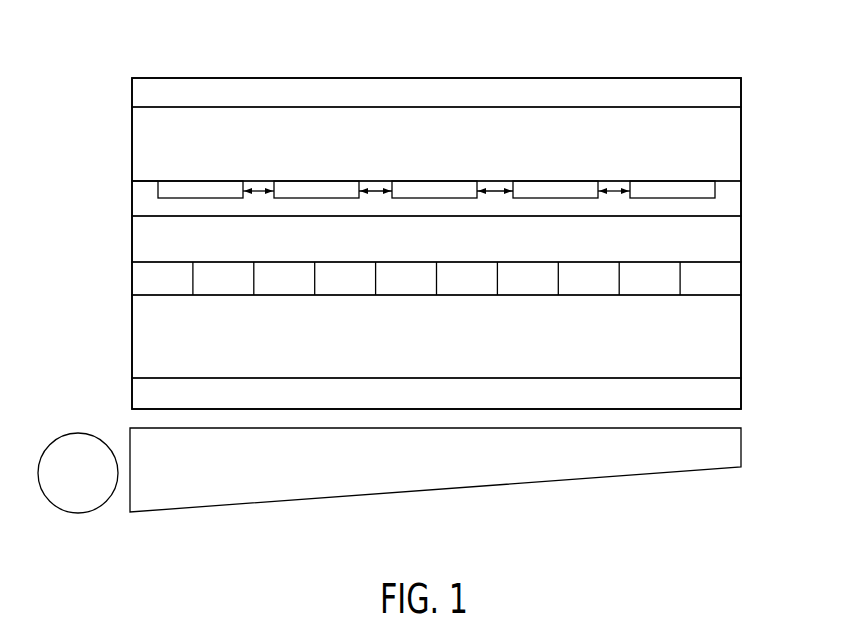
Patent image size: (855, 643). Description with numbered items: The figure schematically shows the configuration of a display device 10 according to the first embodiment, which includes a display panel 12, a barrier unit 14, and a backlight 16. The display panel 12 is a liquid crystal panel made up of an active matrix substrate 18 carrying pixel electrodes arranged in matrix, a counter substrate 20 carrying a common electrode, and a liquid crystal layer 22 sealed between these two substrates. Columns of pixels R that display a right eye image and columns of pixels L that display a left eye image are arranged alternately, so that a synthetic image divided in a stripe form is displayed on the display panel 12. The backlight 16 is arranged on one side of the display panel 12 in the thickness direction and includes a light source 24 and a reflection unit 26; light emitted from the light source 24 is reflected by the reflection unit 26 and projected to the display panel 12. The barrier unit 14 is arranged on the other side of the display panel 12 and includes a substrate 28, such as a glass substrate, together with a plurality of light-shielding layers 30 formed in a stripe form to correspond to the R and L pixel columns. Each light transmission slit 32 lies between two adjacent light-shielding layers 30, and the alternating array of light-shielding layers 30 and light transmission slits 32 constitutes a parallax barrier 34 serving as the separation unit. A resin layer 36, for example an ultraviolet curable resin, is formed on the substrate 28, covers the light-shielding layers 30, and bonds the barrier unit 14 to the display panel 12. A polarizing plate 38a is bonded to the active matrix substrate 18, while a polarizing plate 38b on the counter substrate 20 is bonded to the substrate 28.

The display device 10 is at (745, 72).
The display panel 12 is at (788, 228).
The barrier unit 14 is at (748, 168).
The backlight 16 is at (165, 556).
The active matrix substrate 18 is at (722, 310).
The counter substrate 20 is at (722, 245).
The liquid crystal layer 22 is at (722, 278).
The light source 24 is at (86, 496).
The reflection unit 26 is at (147, 493).
The substrate 28 is at (718, 143).
The light-shielding layer 30 is at (198, 192).
The light transmission slit 32 is at (257, 186).
The parallax barrier 34 is at (157, 179).
The resin layer 36 is at (718, 200).
The polarizing plate 38a is at (718, 393).
The polarizing plate 38b is at (718, 97).